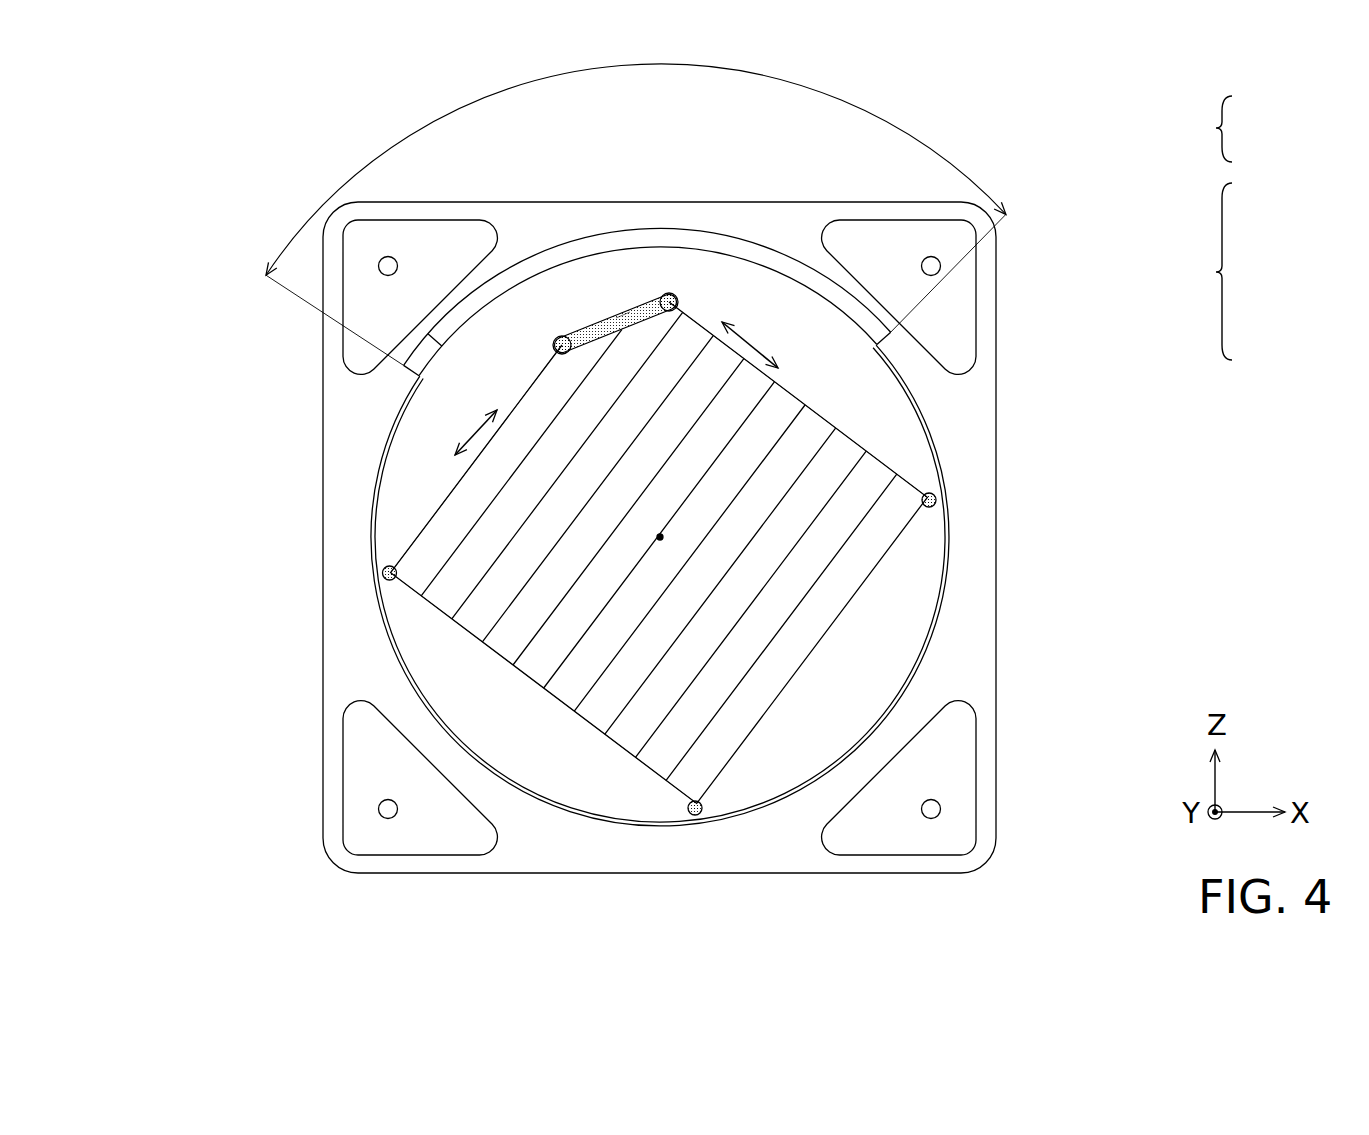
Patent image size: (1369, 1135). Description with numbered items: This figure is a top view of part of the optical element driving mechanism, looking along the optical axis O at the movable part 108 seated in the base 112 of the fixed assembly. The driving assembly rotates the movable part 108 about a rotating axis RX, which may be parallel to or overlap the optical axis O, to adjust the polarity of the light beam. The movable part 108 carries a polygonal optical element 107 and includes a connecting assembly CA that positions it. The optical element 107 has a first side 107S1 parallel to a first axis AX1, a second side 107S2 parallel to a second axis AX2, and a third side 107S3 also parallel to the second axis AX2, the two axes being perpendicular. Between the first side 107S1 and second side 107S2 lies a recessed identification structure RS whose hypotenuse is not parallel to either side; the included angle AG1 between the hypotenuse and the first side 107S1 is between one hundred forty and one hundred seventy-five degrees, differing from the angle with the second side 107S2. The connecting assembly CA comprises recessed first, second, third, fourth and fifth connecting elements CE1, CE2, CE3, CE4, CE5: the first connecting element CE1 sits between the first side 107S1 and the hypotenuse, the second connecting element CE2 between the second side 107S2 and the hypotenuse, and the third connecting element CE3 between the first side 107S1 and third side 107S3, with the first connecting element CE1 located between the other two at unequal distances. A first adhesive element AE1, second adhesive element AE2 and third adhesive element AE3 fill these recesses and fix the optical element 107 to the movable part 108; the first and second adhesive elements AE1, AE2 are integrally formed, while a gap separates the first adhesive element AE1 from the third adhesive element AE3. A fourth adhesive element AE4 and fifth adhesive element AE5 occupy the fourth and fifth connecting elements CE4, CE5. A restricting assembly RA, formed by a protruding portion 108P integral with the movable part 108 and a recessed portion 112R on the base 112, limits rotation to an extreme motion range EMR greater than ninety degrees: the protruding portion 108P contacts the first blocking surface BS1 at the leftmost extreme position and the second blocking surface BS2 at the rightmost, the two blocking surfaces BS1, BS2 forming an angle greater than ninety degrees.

The base 112 is at (311, 797).
The recessed portion 112R is at (794, 260).
The movable part 108 is at (428, 686).
The protruding portion 108P is at (432, 338).
The first blocking surface BS1 is at (403, 366).
The second blocking surface BS2 is at (892, 333).
The extreme motion range EMR is at (636, 197).
The optical element 107 is at (418, 601).
The first side 107S1 is at (450, 494).
The second side 107S2 is at (836, 426).
The third side 107S3 is at (497, 653).
The identification structure RS is at (641, 304).
The included angle AG1 is at (625, 308).
The first connecting element CE1 is at (558, 335).
The second connecting element CE2 is at (673, 295).
The third connecting element CE3 is at (383, 566).
The fourth connecting element CE4 is at (696, 816).
The fifth connecting element CE5 is at (938, 500).
The first adhesive element AE1 is at (551, 356).
The second adhesive element AE2 is at (686, 302).
The third adhesive element AE3 is at (383, 577).
The fourth adhesive element AE4 is at (701, 816).
The fifth adhesive element AE5 is at (938, 505).
The optical axis O is at (666, 540).
The rotating axis RX is at (660, 537).
The first axis AX1 is at (452, 428).
The second axis AX2 is at (770, 340).
The restricting assembly RA is at (1242, 129).
The connecting assembly CA is at (1231, 273).